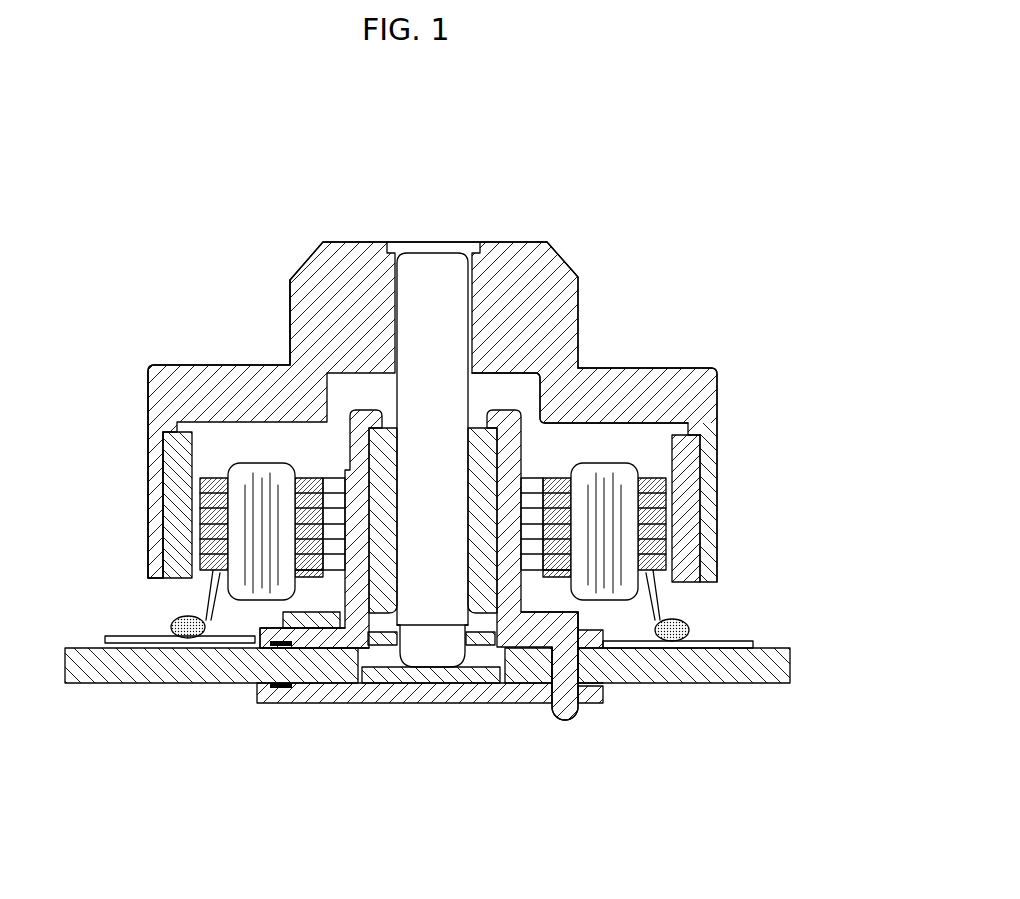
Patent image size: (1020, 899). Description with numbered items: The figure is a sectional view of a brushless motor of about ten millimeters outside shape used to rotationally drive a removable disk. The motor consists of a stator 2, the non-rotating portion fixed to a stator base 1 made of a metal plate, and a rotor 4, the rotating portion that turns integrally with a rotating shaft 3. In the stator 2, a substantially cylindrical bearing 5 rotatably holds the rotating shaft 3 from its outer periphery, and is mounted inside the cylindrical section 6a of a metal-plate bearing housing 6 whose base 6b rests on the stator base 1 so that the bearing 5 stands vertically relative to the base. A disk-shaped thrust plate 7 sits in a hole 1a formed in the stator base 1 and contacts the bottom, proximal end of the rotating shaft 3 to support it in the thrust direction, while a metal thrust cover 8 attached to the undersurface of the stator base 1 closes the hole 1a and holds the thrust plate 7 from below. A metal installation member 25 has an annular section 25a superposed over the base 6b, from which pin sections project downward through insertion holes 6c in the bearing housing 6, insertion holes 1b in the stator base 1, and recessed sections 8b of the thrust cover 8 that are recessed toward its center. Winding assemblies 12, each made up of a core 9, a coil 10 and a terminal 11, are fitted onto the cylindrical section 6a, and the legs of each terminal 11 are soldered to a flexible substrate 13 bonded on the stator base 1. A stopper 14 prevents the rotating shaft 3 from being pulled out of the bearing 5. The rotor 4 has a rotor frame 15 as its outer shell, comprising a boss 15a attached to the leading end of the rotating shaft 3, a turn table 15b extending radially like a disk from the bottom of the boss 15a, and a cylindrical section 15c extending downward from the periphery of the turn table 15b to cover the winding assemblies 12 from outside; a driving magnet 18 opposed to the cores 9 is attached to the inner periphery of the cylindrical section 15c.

The stator base 1 is at (120, 665).
The hole 1a is at (487, 662).
The insertion holes 1b is at (550, 665).
The stator 2 is at (146, 601).
The rotating shaft 3 is at (435, 288).
The rotor 4 is at (236, 296).
The bearing 5 is at (553, 413).
The bearing housing 6 is at (514, 405).
The cylindrical section 6a is at (358, 448).
The base 6b is at (332, 645).
The insertion holes 6c is at (571, 666).
The thrust plate 7 is at (380, 670).
The thrust cover 8 is at (412, 697).
The recessed sections 8b is at (587, 700).
The core 9 is at (663, 500).
The coil 10 is at (620, 452).
The terminal 11 is at (657, 604).
The winding assemblies 12 is at (229, 454).
The flexible substrate 13 is at (720, 642).
The stopper 14 is at (460, 682).
The rotor frame 15 is at (579, 270).
The boss 15a is at (322, 270).
The turn table 15b is at (680, 383).
The cylindrical section 15c is at (153, 478).
The driving magnet 18 is at (175, 540).
The installation member 25 is at (583, 665).
The annular section 25a is at (293, 606).